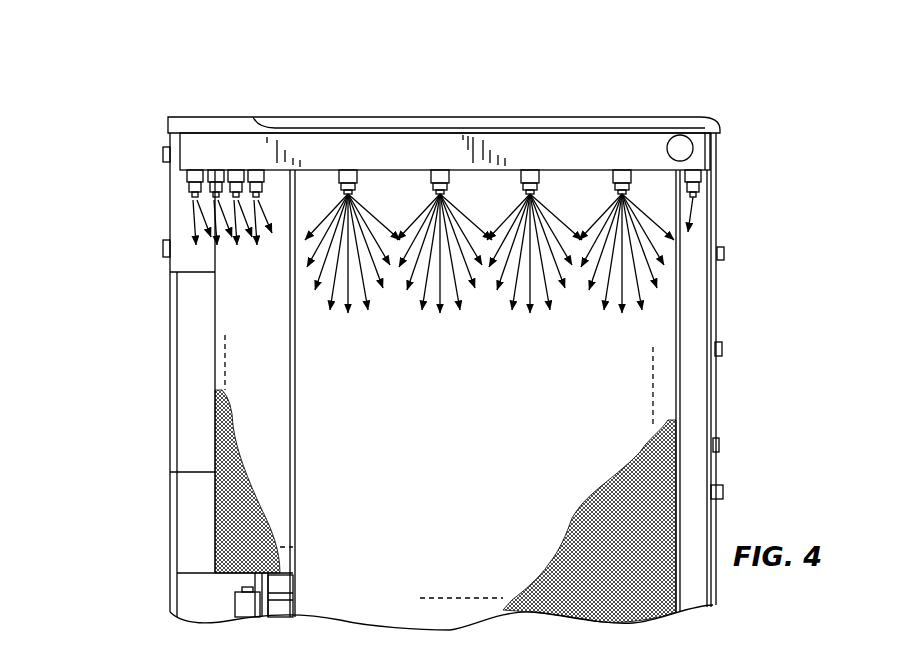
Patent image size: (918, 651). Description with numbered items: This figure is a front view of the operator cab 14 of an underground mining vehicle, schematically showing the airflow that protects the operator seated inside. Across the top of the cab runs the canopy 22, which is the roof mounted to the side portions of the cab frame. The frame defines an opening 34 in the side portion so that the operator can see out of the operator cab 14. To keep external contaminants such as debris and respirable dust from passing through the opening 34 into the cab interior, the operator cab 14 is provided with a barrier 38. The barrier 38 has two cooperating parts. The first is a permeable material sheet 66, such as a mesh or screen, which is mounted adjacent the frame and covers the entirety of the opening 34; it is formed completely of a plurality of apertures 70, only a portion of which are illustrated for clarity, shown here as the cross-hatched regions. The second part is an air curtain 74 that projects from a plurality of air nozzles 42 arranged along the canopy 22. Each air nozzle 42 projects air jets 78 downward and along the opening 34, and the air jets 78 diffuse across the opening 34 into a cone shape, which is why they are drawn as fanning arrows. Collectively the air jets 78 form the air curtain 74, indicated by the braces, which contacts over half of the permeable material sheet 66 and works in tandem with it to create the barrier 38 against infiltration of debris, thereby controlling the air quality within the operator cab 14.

The operator cab 14 is at (73, 108).
The canopy 22 is at (540, 127).
The opening 34 is at (623, 388).
The barrier 38 is at (778, 242).
The air nozzle 42 is at (250, 170).
The permeable material sheet 66 is at (472, 506).
The apertures 70 is at (655, 510).
The air curtain 74 is at (643, 352).
The air jets 78 is at (168, 226).